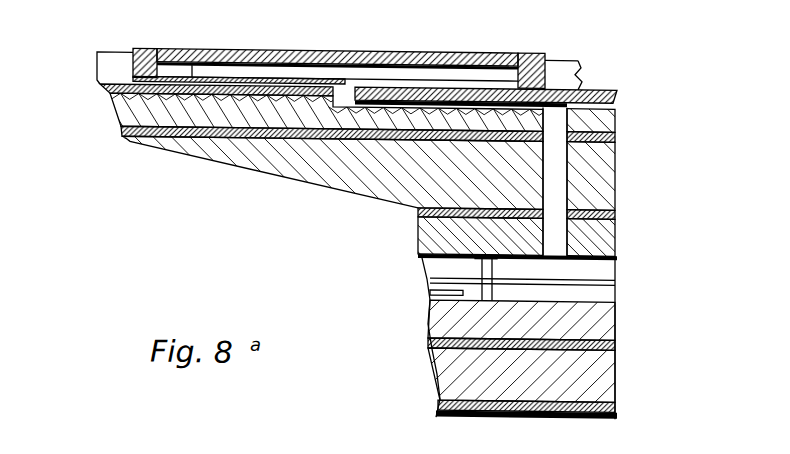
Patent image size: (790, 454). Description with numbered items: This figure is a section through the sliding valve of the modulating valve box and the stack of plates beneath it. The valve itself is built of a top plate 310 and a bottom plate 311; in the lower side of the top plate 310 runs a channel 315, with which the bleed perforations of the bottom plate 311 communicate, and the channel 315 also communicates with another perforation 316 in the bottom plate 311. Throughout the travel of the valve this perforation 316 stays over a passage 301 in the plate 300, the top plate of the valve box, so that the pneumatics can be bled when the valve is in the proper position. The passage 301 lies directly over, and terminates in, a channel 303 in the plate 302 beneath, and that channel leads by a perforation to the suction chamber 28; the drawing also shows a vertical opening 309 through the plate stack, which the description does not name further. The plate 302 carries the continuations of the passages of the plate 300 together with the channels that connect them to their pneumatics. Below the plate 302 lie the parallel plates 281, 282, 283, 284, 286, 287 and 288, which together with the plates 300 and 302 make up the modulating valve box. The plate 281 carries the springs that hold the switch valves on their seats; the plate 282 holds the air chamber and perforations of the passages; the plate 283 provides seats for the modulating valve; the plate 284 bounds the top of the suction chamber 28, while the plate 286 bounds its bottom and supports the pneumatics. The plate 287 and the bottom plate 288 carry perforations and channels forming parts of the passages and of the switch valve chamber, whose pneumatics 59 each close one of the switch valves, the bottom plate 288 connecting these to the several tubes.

The suction chamber 28 is at (598, 264).
The pneumatics 59 is at (430, 288).
The plate 281 is at (178, 139).
The plate 282 is at (282, 170).
The plate 283 is at (402, 199).
The plate 284 is at (420, 236).
The plate 286 is at (433, 312).
The plate 287 is at (435, 340).
The bottom plate 288 is at (438, 373).
The plate 300 is at (102, 85).
The passage 301 is at (338, 75).
The plate 302 is at (116, 108).
The channel 303 is at (487, 103).
The slot 309 is at (557, 160).
The top plate 310 is at (275, 46).
The bottom plate 311 is at (190, 47).
The channel 315 is at (397, 68).
The perforation 316 is at (463, 79).